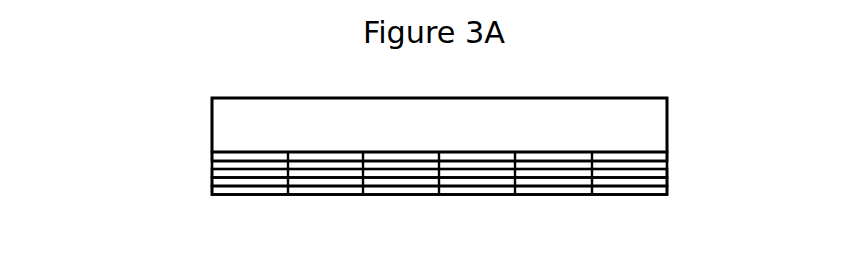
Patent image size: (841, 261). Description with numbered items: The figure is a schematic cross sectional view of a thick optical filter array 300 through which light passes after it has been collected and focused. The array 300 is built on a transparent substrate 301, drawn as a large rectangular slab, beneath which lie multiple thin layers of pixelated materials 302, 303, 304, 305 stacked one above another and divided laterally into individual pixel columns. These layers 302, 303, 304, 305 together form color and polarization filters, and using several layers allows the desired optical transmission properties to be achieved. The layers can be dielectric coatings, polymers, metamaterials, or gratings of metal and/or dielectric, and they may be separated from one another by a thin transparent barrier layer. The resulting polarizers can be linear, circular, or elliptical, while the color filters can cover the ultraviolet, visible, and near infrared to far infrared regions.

The thick optical filter array 300 is at (365, 82).
The transparent substrate 301 is at (667, 127).
The layer of pixelated material 302 is at (212, 157).
The layer of pixelated material 303 is at (667, 172).
The layer of pixelated material 304 is at (212, 178).
The layer of pixelated material 305 is at (667, 190).